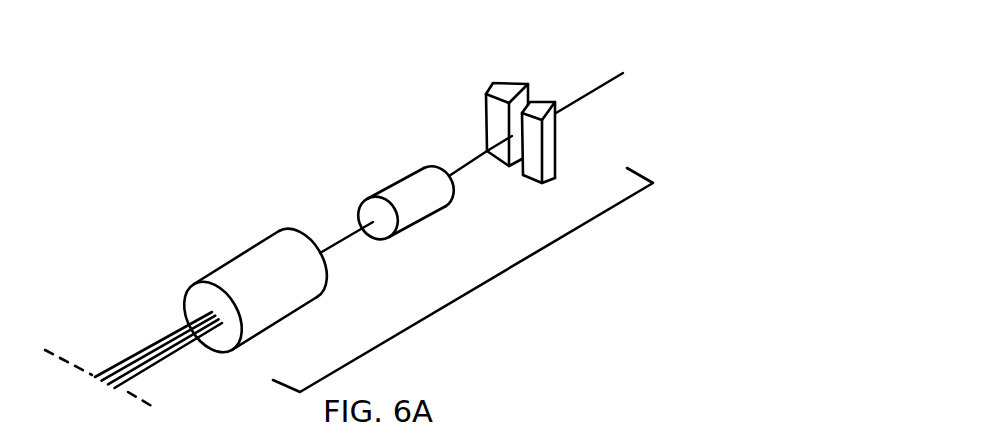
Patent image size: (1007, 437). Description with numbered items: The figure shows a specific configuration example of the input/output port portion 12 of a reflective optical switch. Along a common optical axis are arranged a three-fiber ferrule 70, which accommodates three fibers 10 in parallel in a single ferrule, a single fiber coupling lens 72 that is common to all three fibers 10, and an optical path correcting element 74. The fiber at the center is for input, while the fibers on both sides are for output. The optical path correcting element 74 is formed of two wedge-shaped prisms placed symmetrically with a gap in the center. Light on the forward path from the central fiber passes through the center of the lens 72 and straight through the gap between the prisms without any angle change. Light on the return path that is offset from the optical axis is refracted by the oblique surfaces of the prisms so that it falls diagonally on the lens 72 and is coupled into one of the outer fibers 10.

The fibers 10 is at (145, 342).
The input/output port portion 12 is at (463, 280).
The three-fiber ferrule 70 is at (233, 267).
The single fiber coupling lens 72 is at (397, 187).
The optical path correcting element 74 is at (532, 96).